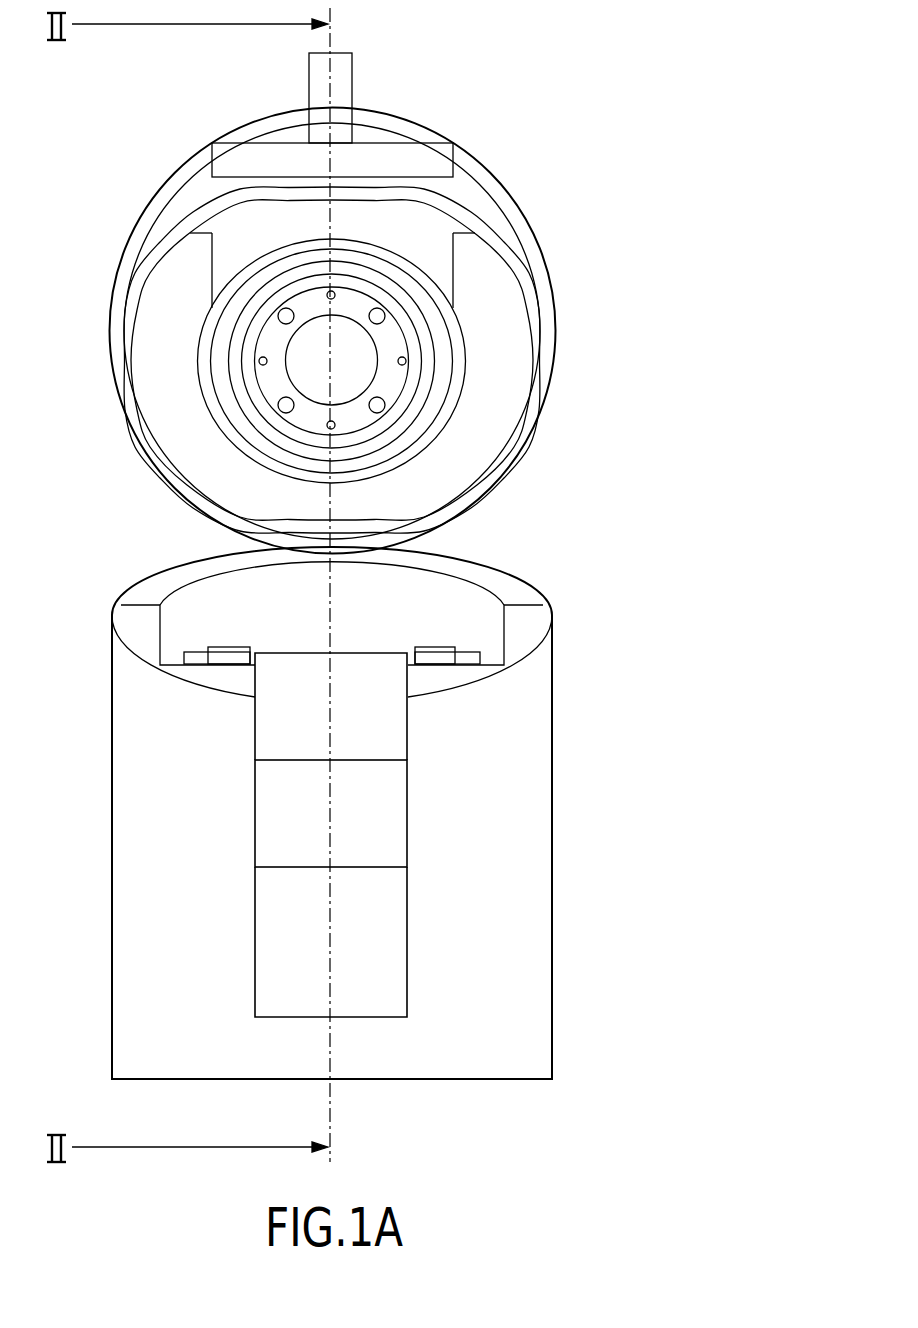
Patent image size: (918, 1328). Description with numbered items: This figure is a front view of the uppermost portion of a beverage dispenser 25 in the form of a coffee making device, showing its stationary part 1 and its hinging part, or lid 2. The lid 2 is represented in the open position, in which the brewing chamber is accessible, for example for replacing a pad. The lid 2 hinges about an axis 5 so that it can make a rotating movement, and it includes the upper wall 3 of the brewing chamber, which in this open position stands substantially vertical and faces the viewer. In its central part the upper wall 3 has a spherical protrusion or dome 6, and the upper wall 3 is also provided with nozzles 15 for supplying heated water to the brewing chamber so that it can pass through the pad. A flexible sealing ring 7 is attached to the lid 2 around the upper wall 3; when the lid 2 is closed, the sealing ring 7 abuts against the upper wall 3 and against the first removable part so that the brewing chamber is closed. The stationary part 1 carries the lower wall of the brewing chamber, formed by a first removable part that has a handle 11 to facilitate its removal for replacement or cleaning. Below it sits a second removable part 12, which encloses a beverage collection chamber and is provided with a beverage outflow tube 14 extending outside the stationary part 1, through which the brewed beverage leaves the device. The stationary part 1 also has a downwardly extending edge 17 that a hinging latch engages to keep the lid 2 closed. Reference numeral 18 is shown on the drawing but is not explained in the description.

The stationary part 1 is at (128, 966).
The hinging part (lid) 2 is at (145, 362).
The upper wall of the brewing chamber 3 is at (397, 337).
The axis 5 is at (420, 544).
The spherical protrusion (dome) 6 is at (345, 385).
The flexible sealing ring 7 is at (267, 445).
The handle 11 is at (383, 726).
The second removable part 12 is at (275, 816).
The beverage outflow tube 14 is at (383, 966).
The nozzles 15 is at (278, 316).
The downwardly extending edge 17 is at (228, 650).
The shaft 18 is at (340, 66).
The beverage dispenser 25 is at (575, 93).